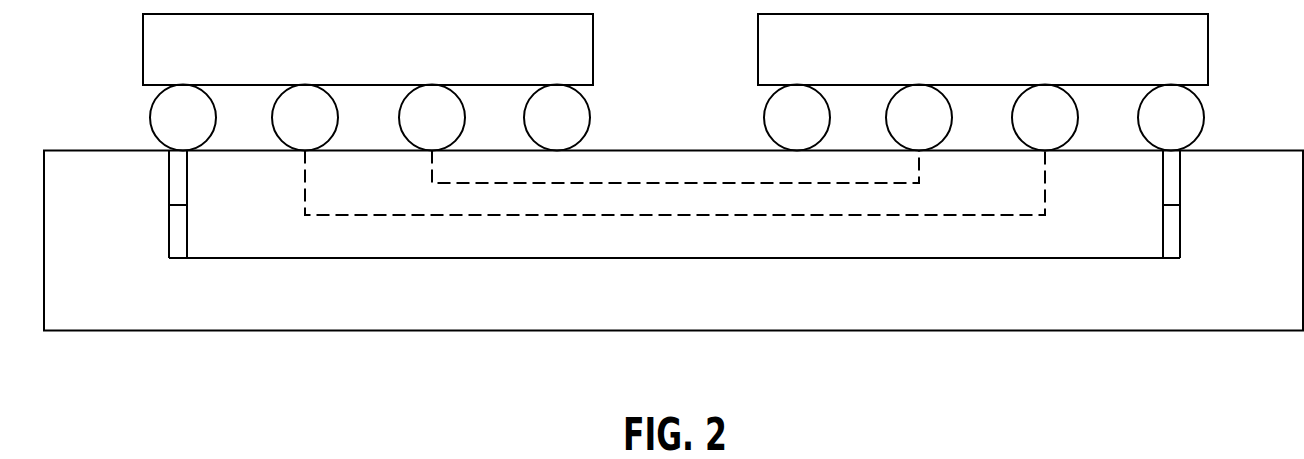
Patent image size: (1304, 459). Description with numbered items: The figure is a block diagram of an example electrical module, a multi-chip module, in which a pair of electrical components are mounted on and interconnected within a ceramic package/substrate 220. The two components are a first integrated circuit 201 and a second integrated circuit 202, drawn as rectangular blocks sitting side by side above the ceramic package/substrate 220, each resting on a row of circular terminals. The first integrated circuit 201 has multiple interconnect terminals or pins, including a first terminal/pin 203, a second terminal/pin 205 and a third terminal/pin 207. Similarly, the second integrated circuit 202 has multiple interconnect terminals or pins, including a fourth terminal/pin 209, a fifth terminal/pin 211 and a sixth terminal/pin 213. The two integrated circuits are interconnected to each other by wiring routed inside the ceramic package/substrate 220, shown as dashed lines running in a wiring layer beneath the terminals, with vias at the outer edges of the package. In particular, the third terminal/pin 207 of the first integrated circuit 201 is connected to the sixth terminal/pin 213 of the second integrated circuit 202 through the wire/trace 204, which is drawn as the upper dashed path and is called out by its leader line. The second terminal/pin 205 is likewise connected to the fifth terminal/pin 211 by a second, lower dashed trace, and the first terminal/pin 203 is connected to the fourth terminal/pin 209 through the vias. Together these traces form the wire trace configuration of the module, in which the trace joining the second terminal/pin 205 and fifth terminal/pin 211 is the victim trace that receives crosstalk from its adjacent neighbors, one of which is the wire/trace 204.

The first integrated circuit 201 is at (351, 62).
The second integrated circuit 202 is at (964, 62).
The first terminal/pin 203 is at (165, 128).
The wire/trace 204 is at (620, 183).
The second terminal/pin 205 is at (287, 128).
The third terminal/pin 207 is at (414, 128).
The fourth terminal/pin 209 is at (1153, 128).
The fifth terminal/pin 211 is at (1027, 128).
The sixth terminal/pin 213 is at (901, 128).
The ceramic package/substrate 220 is at (1242, 312).